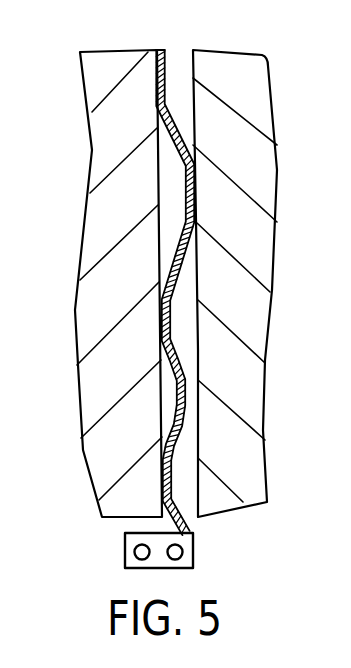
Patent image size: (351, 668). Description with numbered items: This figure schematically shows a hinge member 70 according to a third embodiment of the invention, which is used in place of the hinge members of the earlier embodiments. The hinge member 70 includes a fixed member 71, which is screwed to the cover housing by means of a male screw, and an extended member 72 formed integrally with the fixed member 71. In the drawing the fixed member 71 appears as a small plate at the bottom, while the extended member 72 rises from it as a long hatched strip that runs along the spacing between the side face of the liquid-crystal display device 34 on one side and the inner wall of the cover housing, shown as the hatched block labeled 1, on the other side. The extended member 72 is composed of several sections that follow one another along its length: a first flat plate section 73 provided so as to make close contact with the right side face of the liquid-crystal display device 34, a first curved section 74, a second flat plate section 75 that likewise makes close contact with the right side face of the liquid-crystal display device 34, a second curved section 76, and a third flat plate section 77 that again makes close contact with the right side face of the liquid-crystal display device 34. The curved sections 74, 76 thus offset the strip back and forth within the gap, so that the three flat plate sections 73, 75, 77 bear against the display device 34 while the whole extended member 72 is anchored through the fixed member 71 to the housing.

The body 1 is at (272, 175).
The liquid-crystal display device 34 is at (92, 82).
The hinge member 70 is at (194, 558).
The fixed member 71 is at (127, 547).
The extended member 72 is at (166, 56).
The first flat plate section 73 is at (170, 470).
The first curved section 74 is at (182, 388).
The second flat plate section 75 is at (170, 305).
The second curved section 76 is at (194, 200).
The third flat plate section 77 is at (165, 77).